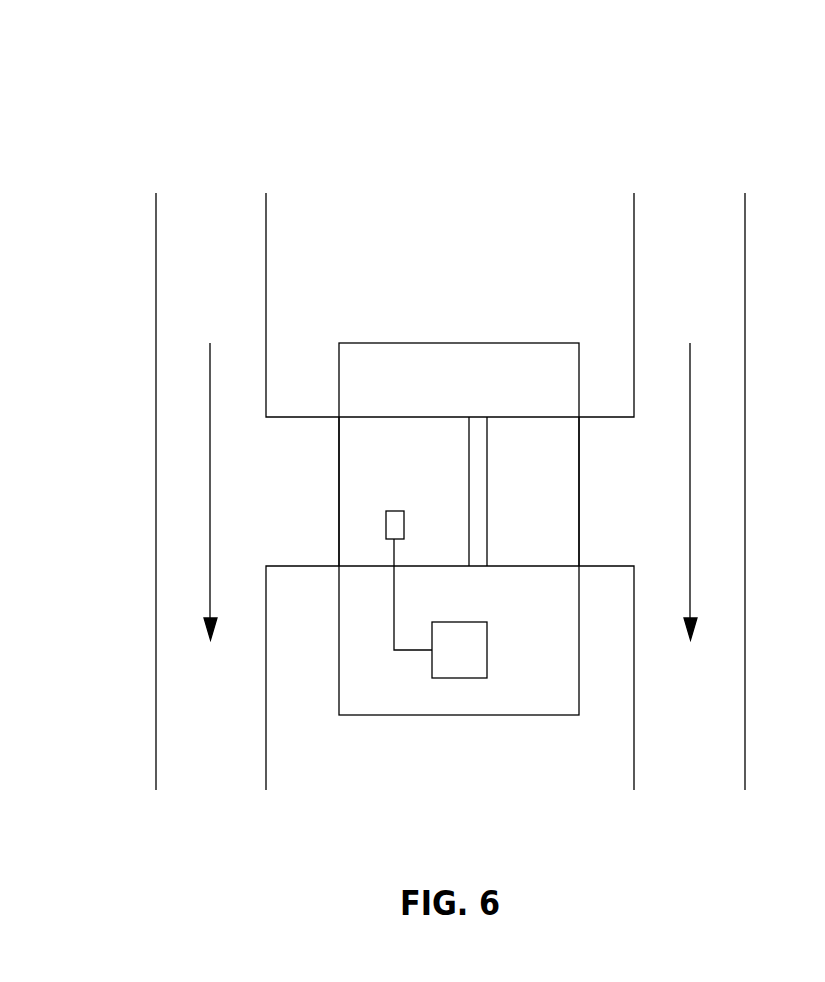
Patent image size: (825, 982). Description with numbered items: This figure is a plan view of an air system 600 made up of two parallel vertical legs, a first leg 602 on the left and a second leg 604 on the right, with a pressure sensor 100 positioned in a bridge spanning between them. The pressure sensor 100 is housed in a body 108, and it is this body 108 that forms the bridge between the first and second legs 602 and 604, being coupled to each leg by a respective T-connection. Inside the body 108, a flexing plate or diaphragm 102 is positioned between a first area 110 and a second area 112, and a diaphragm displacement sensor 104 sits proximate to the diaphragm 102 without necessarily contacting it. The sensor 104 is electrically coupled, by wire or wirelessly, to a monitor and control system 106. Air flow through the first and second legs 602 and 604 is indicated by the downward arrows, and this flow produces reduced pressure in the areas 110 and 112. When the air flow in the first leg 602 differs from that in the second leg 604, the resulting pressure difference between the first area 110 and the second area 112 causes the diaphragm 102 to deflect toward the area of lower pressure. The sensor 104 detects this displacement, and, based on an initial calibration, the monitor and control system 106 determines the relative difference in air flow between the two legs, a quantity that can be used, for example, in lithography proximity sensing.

The air system 600 is at (152, 79).
The first leg 602 is at (156, 305).
The second leg 604 is at (745, 325).
The pressure sensor 100 is at (410, 342).
The diaphragm 102 is at (473, 417).
The diaphragm displacement sensor 104 is at (392, 511).
The monitor and control system 106 is at (487, 640).
The body 108 is at (373, 416).
The first area 110 is at (358, 473).
The second area 112 is at (547, 453).